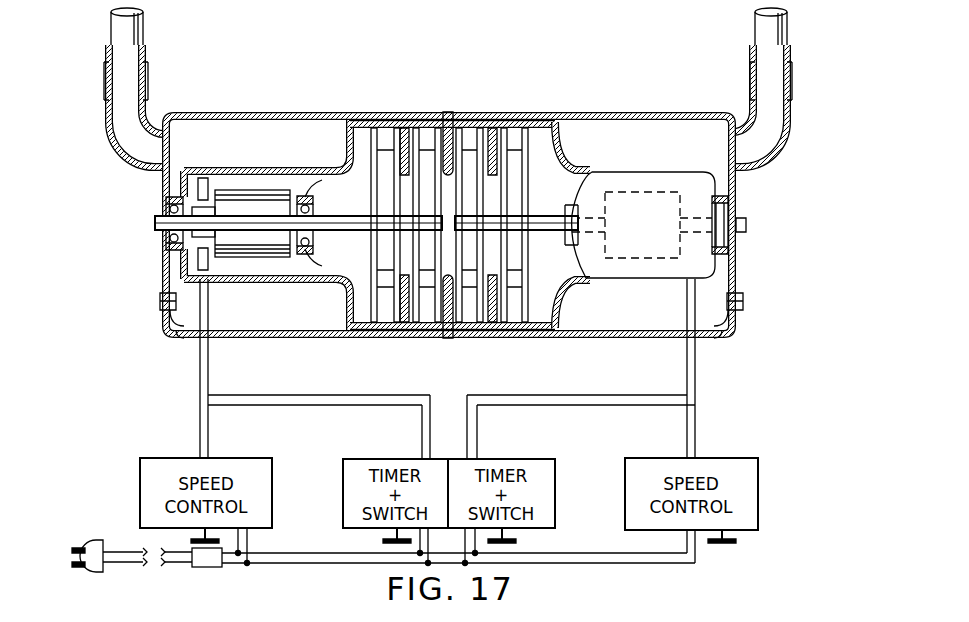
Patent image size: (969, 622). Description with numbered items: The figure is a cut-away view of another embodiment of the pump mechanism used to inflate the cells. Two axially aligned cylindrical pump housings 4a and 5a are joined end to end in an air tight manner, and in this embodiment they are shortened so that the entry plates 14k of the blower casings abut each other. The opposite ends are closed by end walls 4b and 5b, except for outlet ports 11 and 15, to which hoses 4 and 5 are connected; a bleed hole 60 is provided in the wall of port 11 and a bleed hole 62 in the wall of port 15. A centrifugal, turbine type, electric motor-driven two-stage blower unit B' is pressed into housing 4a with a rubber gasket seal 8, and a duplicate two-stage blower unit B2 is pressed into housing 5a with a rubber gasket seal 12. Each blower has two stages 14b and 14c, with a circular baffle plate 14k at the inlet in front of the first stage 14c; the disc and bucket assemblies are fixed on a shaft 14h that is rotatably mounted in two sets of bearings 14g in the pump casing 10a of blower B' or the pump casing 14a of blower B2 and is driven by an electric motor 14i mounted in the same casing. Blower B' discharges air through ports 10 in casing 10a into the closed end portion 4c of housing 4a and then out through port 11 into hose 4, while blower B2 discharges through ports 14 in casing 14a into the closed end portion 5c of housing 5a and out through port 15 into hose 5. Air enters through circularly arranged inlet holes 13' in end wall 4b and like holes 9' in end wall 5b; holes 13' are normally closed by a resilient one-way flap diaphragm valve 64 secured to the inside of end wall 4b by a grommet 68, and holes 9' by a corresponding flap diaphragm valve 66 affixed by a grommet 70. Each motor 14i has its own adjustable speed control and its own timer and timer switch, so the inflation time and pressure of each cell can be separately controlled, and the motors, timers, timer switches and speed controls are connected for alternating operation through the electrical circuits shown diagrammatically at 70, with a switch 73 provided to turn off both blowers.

The hose 4 is at (145, 30).
The hose 5 is at (788, 32).
The outlet port 11 is at (124, 112).
The bleed hole 60 is at (123, 153).
The outlet port 15 is at (770, 96).
The bleed hole 62 is at (777, 148).
The cylindrical pump housing 4a is at (305, 112).
The end wall 4b is at (166, 275).
The closed end portion 4c is at (308, 312).
The cylindrical pump housing 5a is at (620, 112).
The end wall 5b is at (738, 196).
The closed end portion 5c is at (591, 314).
The pump casing 10a is at (260, 170).
The ports 10 is at (336, 160).
The electric motor 14i is at (232, 192).
The bearings 14g is at (163, 200).
The two-stage blower unit B' is at (314, 216).
The two-stage blower unit B2 is at (557, 218).
The shaft 14h is at (330, 224).
The rubber gasket seal 8 is at (385, 118).
The blower stage 14b is at (527, 112).
The blower stage 14c is at (472, 110).
The circular baffle plate 14k is at (443, 150).
The rubber gasket seal 12 is at (448, 112).
The ports 14 is at (569, 165).
The pump casing 14a is at (655, 172).
The grommet 68 is at (160, 301).
The air inlet holes 13' is at (153, 338).
The one-way flap diaphragm valve 64 is at (178, 340).
The air inlet holes 9' is at (743, 323).
The one-way flap diaphragm valve 66 is at (722, 340).
The electrical circuits 70 is at (741, 306).
The switch 73 is at (203, 568).